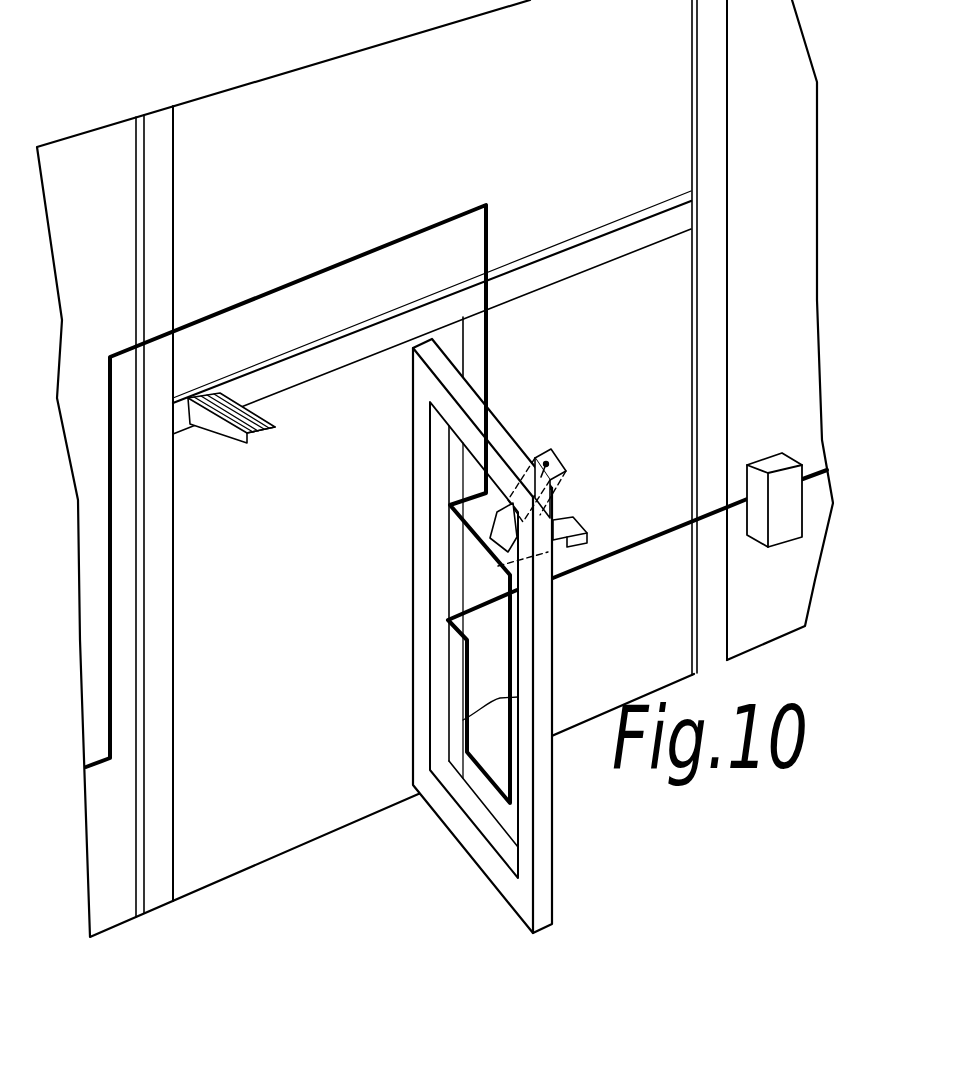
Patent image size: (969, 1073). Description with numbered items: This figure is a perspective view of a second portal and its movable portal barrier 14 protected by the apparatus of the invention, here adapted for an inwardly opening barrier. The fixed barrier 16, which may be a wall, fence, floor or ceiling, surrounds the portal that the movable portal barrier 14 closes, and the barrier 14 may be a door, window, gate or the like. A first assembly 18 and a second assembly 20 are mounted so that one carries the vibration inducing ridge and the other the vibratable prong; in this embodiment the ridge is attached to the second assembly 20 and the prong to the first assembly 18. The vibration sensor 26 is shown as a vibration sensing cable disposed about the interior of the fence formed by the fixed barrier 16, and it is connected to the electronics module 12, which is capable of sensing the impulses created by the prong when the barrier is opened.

The electronics module 12 is at (790, 538).
The movable portal barrier 14 is at (562, 895).
The fixed barrier 16 is at (810, 78).
The first assembly 18 is at (496, 518).
The second assembly 20 is at (262, 438).
The vibration sensor 26 is at (502, 618).